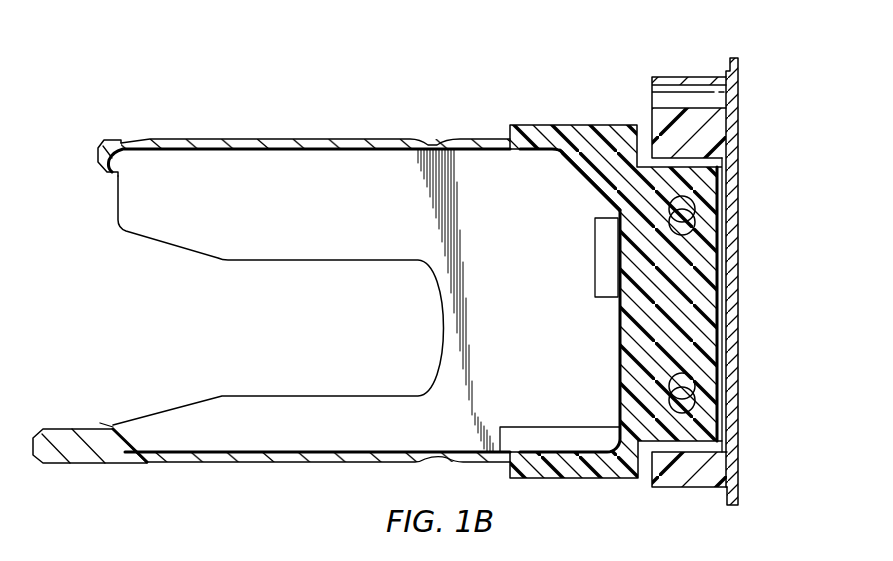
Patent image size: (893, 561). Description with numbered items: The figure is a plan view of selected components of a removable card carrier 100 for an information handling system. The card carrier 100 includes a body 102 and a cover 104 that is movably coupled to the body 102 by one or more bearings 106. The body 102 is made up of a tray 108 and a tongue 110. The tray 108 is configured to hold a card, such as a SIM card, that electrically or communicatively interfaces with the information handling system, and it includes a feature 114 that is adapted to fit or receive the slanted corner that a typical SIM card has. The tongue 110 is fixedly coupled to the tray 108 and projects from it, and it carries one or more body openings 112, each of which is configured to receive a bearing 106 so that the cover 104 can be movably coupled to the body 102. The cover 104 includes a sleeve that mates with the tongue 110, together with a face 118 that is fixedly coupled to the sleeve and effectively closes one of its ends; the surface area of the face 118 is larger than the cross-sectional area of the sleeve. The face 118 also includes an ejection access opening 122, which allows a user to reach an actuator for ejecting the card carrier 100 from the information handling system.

The card carrier 100 is at (336, 88).
The body 102 is at (270, 463).
The cover 104 is at (665, 488).
The bearing 106 is at (683, 218).
The tray 108 is at (370, 396).
The tongue 110 is at (692, 447).
The body opening 112 is at (687, 197).
The feature 114 is at (587, 174).
The face 118 is at (739, 297).
The ejection access opening 122 is at (726, 99).